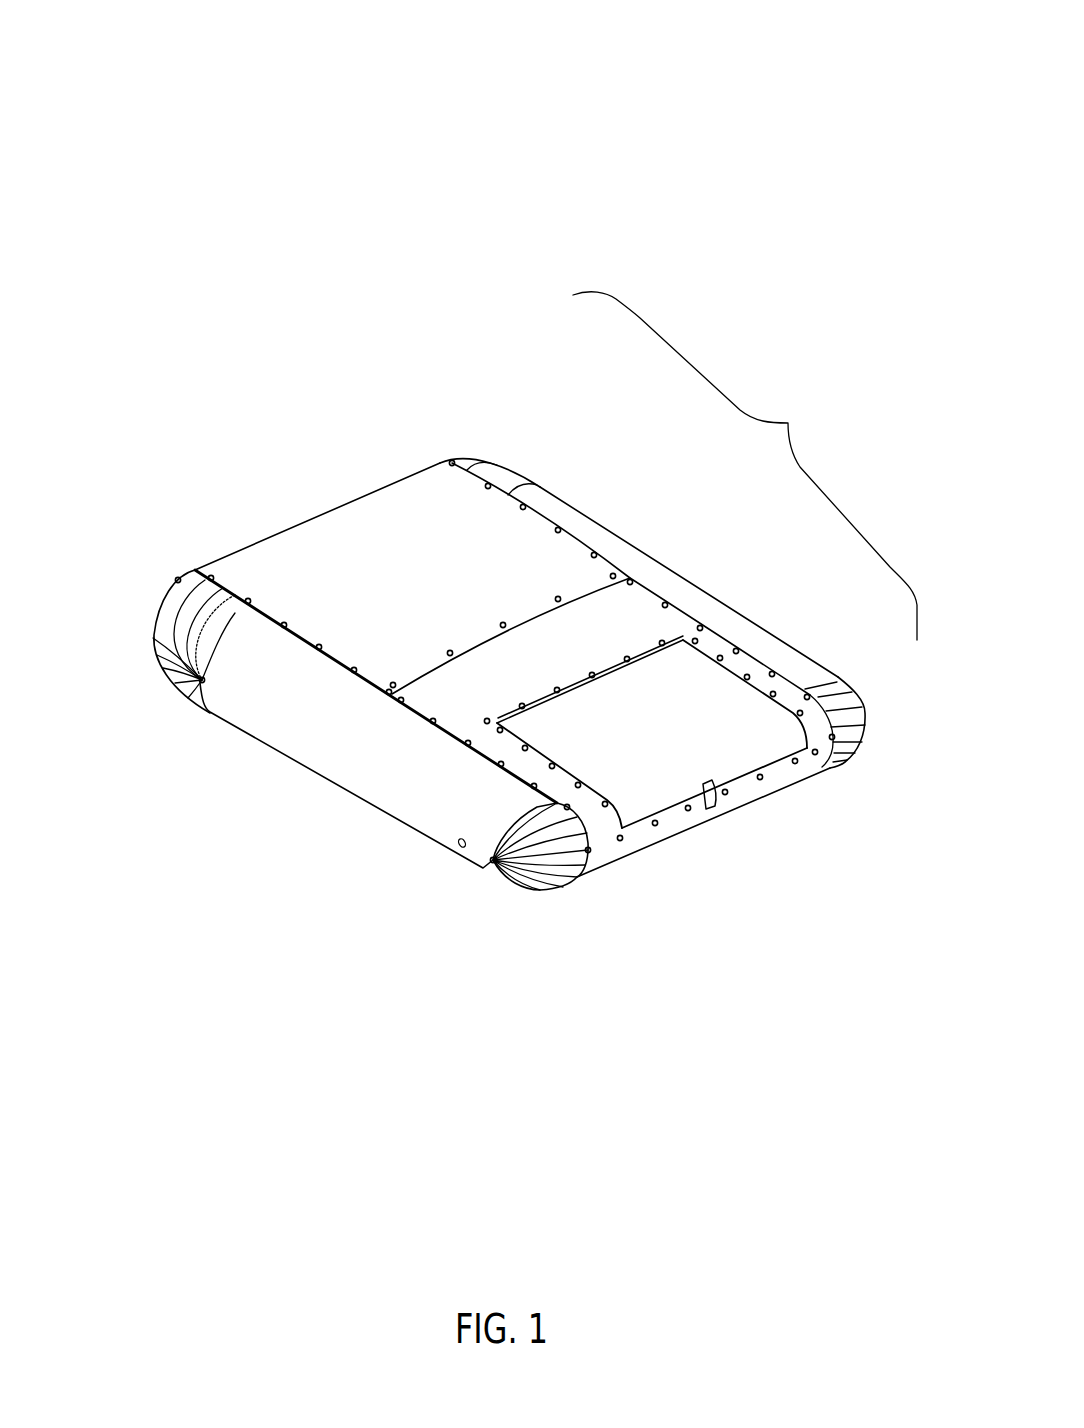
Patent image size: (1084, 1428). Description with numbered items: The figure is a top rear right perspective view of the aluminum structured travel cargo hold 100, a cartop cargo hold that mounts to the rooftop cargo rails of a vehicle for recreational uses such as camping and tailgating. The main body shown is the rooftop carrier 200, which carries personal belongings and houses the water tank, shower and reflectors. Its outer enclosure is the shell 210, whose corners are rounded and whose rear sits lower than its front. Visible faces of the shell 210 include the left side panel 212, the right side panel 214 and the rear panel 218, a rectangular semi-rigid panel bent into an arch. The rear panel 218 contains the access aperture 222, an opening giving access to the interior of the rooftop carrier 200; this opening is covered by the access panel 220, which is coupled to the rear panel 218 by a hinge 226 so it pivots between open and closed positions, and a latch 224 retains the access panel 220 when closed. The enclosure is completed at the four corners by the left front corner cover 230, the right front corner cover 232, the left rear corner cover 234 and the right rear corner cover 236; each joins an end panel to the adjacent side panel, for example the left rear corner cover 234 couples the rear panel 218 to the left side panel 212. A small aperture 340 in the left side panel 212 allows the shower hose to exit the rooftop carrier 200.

The aluminum structured travel cargo hold 100 is at (126, 180).
The rooftop carrier 200 is at (797, 417).
The shell 210 is at (357, 550).
The left side panel 212 is at (338, 758).
The right side panel 214 is at (568, 518).
The rear panel 218 is at (600, 637).
The access panel 220 is at (649, 787).
The access aperture 222 is at (780, 760).
The latch 224 is at (717, 808).
The hinge 226 is at (652, 652).
The left front corner cover 230 is at (153, 648).
The right front corner cover 232 is at (497, 465).
The left rear corner cover 234 is at (547, 866).
The right rear corner cover 236 is at (865, 723).
The aperture 340 is at (461, 848).